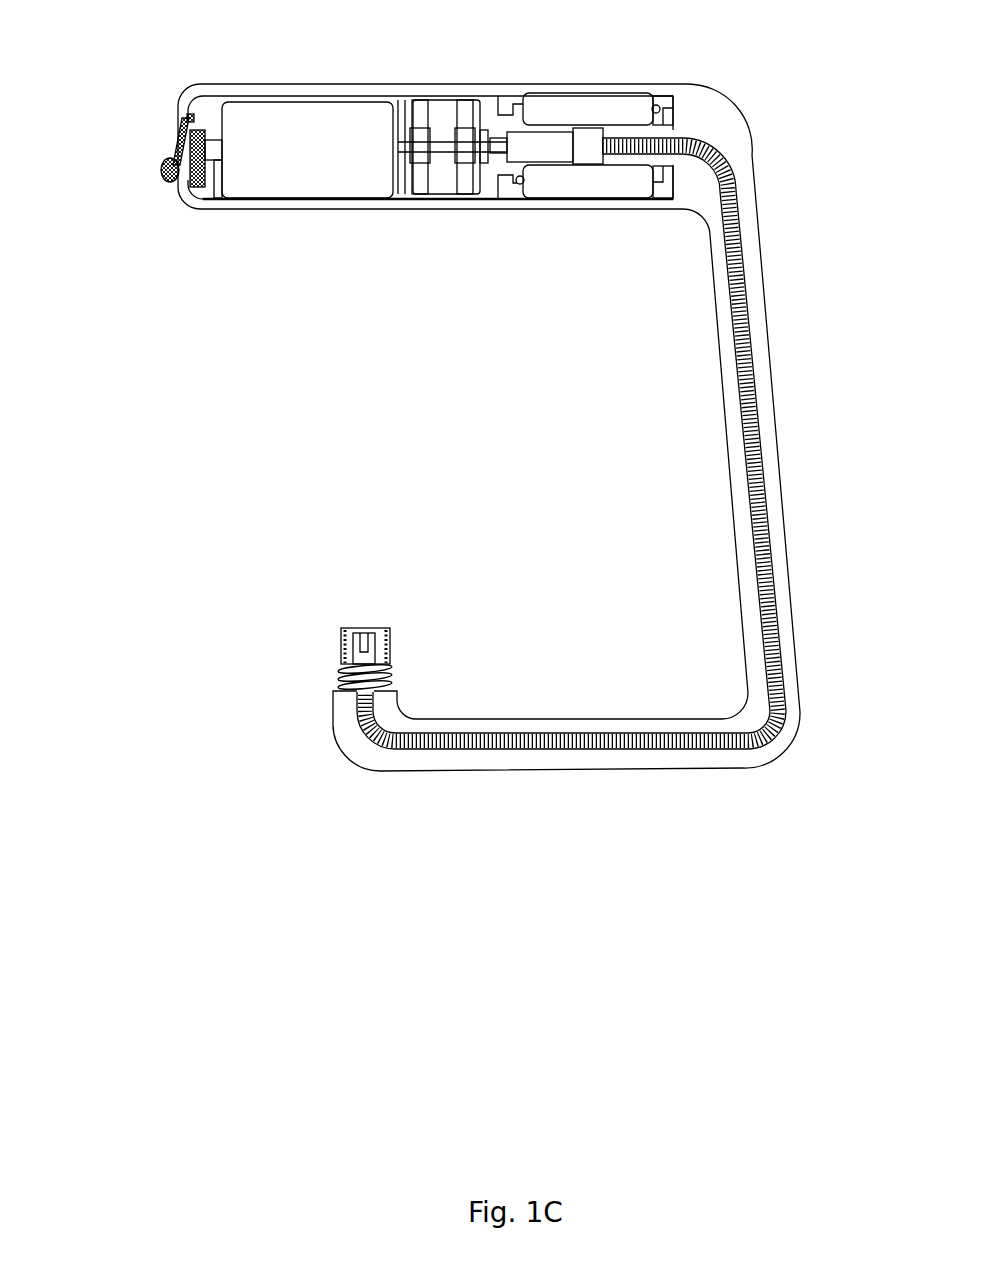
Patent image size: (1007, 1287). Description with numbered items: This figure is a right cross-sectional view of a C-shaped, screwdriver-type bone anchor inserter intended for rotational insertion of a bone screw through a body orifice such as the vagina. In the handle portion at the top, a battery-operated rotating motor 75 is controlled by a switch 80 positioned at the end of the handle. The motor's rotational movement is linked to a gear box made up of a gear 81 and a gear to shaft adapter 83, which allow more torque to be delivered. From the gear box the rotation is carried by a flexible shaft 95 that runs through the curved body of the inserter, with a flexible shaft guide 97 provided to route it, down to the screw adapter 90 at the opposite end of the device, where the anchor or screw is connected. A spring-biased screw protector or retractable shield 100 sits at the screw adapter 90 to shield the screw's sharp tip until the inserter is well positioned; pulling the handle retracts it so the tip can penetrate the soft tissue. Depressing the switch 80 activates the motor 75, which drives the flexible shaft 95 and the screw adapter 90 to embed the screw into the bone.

The motor 75 is at (310, 148).
The switch 80 is at (170, 155).
The gear 81 is at (445, 147).
The gear to shaft adapter 83 is at (547, 142).
The screw adapter 90 is at (364, 638).
The flexible shaft 95 is at (763, 487).
The flexible shaft guide 97 is at (762, 388).
The screw protector or retractable shield 100 is at (340, 652).